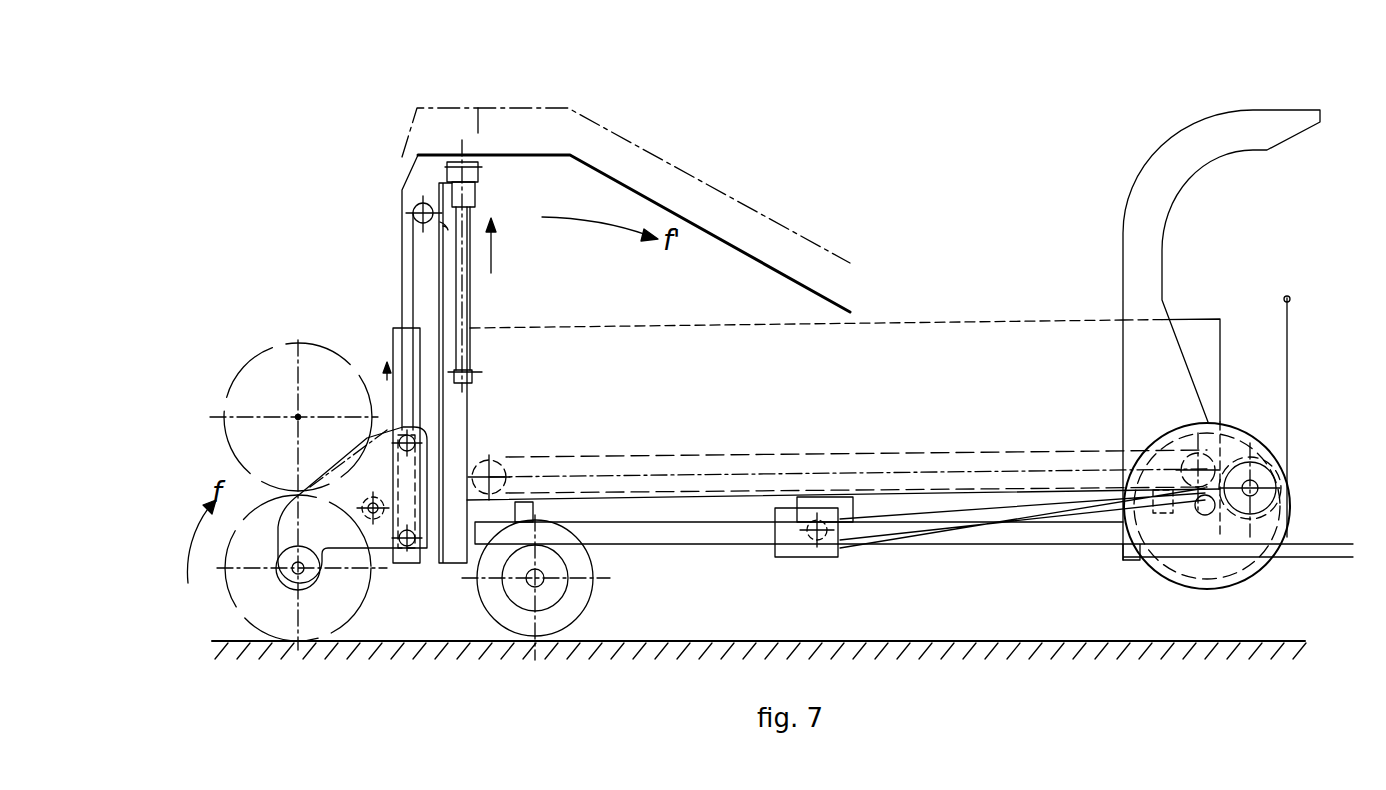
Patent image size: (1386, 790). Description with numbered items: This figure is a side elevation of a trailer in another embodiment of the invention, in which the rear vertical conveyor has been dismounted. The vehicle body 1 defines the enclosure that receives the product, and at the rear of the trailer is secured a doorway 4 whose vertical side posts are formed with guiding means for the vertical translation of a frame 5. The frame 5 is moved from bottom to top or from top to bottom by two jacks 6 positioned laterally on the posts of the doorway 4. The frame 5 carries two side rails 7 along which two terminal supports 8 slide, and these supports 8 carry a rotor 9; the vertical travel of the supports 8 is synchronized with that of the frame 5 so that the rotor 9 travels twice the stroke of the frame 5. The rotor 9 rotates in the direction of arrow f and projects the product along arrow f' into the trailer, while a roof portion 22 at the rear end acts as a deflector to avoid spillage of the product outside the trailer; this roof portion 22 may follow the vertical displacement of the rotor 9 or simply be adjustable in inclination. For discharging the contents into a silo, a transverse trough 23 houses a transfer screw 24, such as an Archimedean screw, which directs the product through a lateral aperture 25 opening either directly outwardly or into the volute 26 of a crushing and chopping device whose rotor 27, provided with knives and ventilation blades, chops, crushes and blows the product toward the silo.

The vehicle body 1 is at (925, 340).
The doorway 4 is at (452, 417).
The frame 5 is at (418, 190).
The jacks 6 is at (470, 307).
The side rails 7 is at (393, 347).
The terminal supports 8 is at (340, 470).
The rotor 9 is at (298, 417).
The roof portion 22 is at (708, 230).
The transverse trough 23 is at (1290, 490).
The transfer screw 24 is at (1255, 487).
The lateral aperture 25 is at (1237, 460).
The volute 26 is at (1285, 523).
The rotor 27 is at (1240, 567).